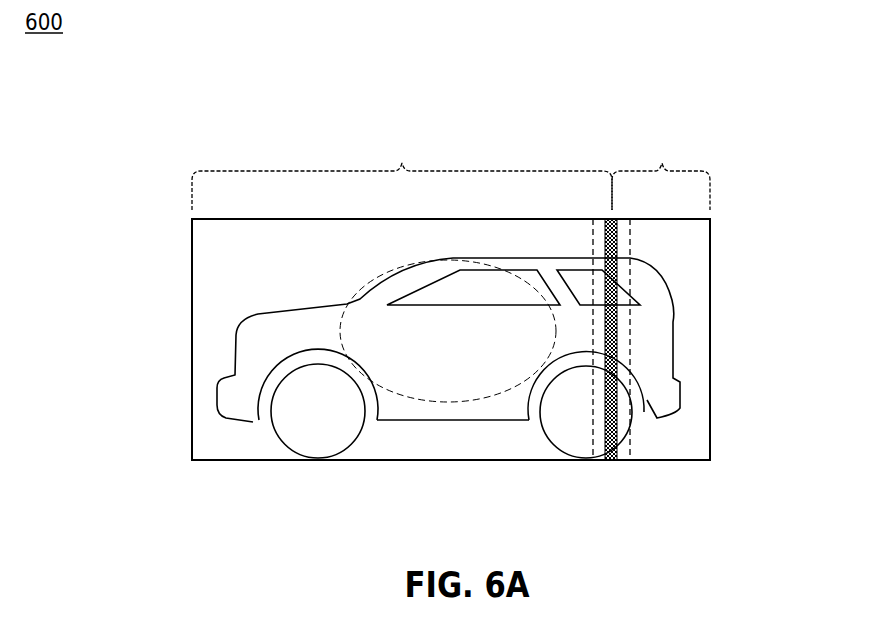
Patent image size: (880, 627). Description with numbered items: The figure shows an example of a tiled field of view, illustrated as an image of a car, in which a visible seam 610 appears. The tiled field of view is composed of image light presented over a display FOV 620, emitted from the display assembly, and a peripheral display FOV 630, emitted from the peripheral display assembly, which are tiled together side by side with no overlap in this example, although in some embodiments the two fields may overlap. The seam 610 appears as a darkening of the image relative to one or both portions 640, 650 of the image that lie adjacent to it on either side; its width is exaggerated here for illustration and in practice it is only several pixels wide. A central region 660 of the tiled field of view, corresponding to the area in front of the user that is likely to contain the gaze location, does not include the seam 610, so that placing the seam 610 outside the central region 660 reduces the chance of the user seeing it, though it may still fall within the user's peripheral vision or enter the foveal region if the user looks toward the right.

The seam 610 is at (612, 332).
The display FOV 620 is at (402, 123).
The peripheral display FOV 630 is at (665, 123).
The portion 640 is at (602, 441).
The portion 650 is at (625, 450).
The central region 660 is at (428, 392).